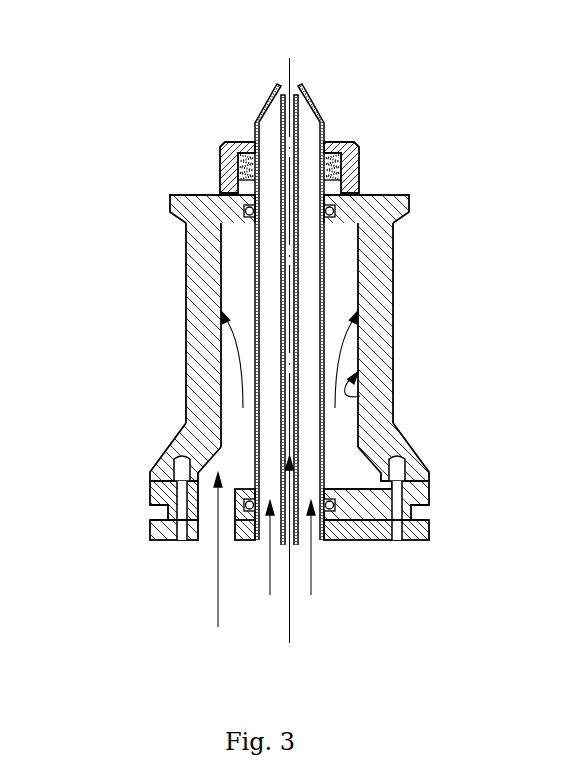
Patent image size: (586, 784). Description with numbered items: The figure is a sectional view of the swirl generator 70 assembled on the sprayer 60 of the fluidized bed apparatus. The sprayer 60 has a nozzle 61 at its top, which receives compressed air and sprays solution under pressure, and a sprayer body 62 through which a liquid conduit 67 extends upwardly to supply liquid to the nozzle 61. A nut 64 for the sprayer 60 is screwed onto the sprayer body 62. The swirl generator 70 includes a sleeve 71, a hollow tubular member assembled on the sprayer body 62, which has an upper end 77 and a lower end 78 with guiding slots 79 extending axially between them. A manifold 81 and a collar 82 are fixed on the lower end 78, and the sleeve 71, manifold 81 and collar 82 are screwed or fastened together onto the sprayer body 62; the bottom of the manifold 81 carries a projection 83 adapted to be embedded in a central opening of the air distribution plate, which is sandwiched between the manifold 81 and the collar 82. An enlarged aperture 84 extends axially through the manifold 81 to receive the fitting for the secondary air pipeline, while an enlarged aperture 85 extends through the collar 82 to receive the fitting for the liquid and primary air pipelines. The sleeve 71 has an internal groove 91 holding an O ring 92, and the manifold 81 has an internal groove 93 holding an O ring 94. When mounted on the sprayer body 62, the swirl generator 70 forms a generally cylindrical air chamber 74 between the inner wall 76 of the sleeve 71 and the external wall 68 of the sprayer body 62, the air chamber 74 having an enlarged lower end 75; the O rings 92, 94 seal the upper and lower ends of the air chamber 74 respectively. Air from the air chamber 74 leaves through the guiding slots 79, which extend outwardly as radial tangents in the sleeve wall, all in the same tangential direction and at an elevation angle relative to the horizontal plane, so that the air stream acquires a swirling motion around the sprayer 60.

The sprayer 60 is at (414, 139).
The nozzle 61 is at (401, 280).
The sprayer body 62 is at (178, 281).
The nut 64 is at (414, 157).
The liquid conduit 67 is at (392, 301).
The external wall 68 is at (402, 312).
The swirl generator 70 is at (165, 318).
The sleeve 71 is at (448, 323).
The air chamber 74 is at (159, 313).
The enlarged lower end 75 is at (155, 436).
The inner wall 76 is at (419, 359).
The upper end 77 is at (414, 324).
The lower end 78 is at (431, 436).
The guiding slots 79 is at (431, 335).
The manifold 81 is at (414, 494).
The collar 82 is at (327, 524).
The projection 83 is at (136, 503).
The enlarged aperture 84 is at (148, 566).
The enlarged aperture 85 is at (369, 553).
The internal groove 91 is at (145, 152).
The O ring 92 is at (146, 152).
The internal groove 93 is at (118, 486).
The O ring 94 is at (376, 498).